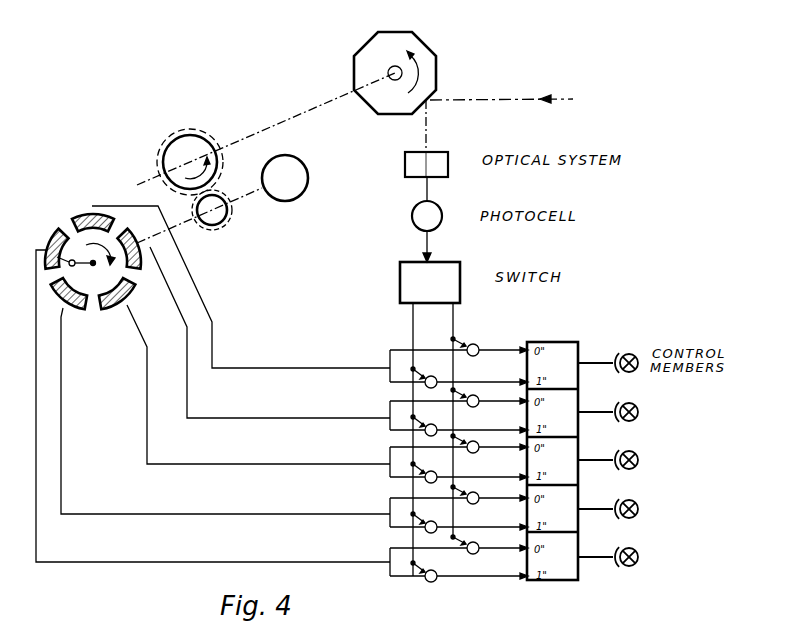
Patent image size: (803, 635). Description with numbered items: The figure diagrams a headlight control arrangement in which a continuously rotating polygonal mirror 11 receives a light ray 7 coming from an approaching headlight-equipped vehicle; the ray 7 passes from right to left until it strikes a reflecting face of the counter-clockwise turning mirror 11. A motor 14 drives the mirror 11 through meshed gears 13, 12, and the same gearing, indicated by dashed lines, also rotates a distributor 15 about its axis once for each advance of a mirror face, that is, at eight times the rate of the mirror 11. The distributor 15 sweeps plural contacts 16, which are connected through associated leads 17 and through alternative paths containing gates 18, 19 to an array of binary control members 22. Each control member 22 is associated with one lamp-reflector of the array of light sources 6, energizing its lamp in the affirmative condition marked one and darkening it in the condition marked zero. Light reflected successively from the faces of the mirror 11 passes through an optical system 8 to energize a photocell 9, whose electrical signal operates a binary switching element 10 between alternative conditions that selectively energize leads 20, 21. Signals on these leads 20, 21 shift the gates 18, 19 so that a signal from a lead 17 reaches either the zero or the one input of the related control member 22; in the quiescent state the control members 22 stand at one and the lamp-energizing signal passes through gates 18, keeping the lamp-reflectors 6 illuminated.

The lamp-reflectors 6 is at (627, 349).
The light ray 7 is at (511, 101).
The optical system 8 is at (448, 163).
The photocell 9 is at (442, 216).
The binary switching element 10 is at (460, 275).
The polygonal mirror 11 is at (418, 42).
The gear 12 is at (215, 145).
The gear 13 is at (226, 218).
The motor 14 is at (308, 181).
The distributor 15 is at (84, 287).
The contacts 16 is at (50, 241).
The leads 17 is at (310, 464).
The gate 18 is at (436, 581).
The gate 19 is at (478, 552).
The lead 20 is at (413, 330).
The lead 21 is at (453, 330).
The binary control members 22 is at (559, 347).